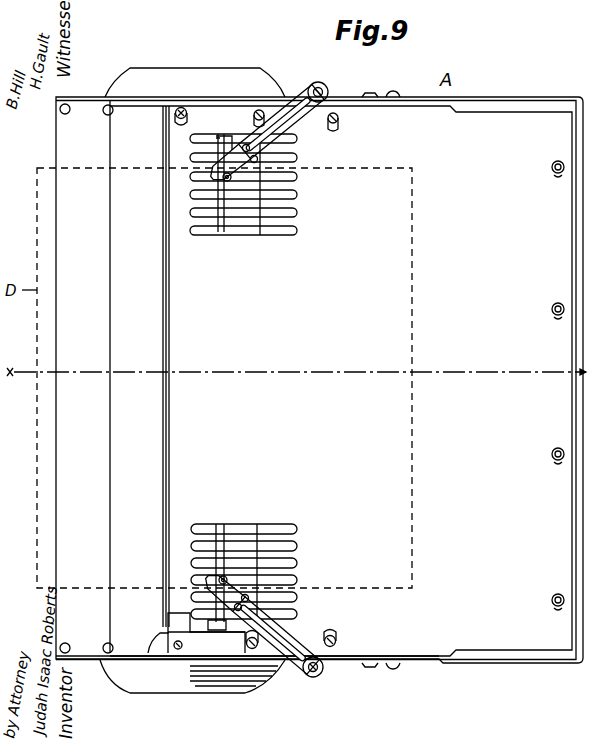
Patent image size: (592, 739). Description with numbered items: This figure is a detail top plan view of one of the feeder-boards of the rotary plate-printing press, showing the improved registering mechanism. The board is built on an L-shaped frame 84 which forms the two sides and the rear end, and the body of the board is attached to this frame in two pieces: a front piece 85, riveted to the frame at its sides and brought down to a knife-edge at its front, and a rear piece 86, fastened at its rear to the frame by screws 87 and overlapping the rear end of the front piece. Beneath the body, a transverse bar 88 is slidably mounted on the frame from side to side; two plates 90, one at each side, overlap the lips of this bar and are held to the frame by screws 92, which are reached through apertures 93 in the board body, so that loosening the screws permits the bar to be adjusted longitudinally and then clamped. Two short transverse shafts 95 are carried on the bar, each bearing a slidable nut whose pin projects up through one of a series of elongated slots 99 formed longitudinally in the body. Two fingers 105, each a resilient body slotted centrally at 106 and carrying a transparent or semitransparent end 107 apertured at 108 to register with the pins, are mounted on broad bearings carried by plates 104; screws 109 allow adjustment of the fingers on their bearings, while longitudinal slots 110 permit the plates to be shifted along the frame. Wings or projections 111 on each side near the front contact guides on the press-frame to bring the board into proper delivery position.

The frame 84 is at (512, 94).
The front piece 85 is at (88, 376).
The rear piece 86 is at (310, 366).
The screws 87 is at (551, 310).
The transverse bar 88 is at (240, 527).
The plates 90 is at (196, 633).
The screws 92 is at (172, 121).
The apertures 93 is at (178, 122).
The short transverse shafts 95 is at (220, 232).
The elongated slots 99 is at (288, 194).
The plates 104 is at (375, 86).
The fingers 105 is at (290, 108).
The slot 106 is at (296, 128).
The transparent end 107 is at (170, 600).
The apertures 108 is at (222, 179).
The screws 109 is at (322, 85).
The longitudinal slots 110 is at (395, 91).
The wings or projections 111 is at (195, 76).